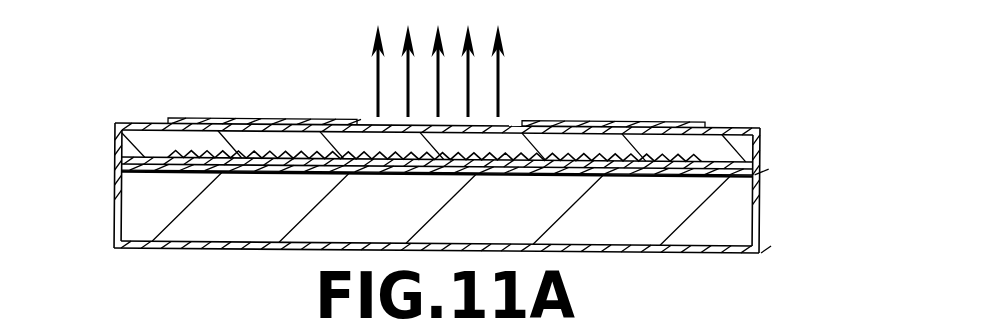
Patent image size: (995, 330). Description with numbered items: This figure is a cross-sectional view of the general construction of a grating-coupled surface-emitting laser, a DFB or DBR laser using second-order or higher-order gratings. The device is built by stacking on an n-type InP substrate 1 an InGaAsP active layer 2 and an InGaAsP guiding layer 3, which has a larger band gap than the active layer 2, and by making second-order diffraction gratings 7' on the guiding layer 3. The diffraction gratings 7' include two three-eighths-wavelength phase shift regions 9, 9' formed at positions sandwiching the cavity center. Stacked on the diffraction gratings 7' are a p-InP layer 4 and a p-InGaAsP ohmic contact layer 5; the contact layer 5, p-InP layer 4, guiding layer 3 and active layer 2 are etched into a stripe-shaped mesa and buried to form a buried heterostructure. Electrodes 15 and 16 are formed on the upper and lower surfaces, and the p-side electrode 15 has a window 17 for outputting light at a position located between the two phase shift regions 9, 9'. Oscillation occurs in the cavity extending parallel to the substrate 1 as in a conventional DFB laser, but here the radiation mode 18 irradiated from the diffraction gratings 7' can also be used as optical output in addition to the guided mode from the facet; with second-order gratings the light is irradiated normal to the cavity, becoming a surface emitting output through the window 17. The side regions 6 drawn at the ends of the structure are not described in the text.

The n-type InP substrate 1 is at (185, 225).
The InGaAsP active layer 2 is at (132, 166).
The InGaAsP guiding layer 3 is at (197, 150).
The p-InP layer 4 is at (147, 138).
The p-InGaAsP ohmic contact layer 5 is at (130, 123).
The side reflective layer 6 is at (118, 143).
The second-order diffraction gratings 7' is at (684, 89).
The 3λ/8 phase shift region 9 is at (303, 109).
The 3λ/8 phase shift region 9' is at (573, 108).
The p-side electrode 15 is at (230, 117).
The electrode 16 is at (700, 252).
The window 17 is at (368, 124).
The radiation mode 18 is at (502, 97).